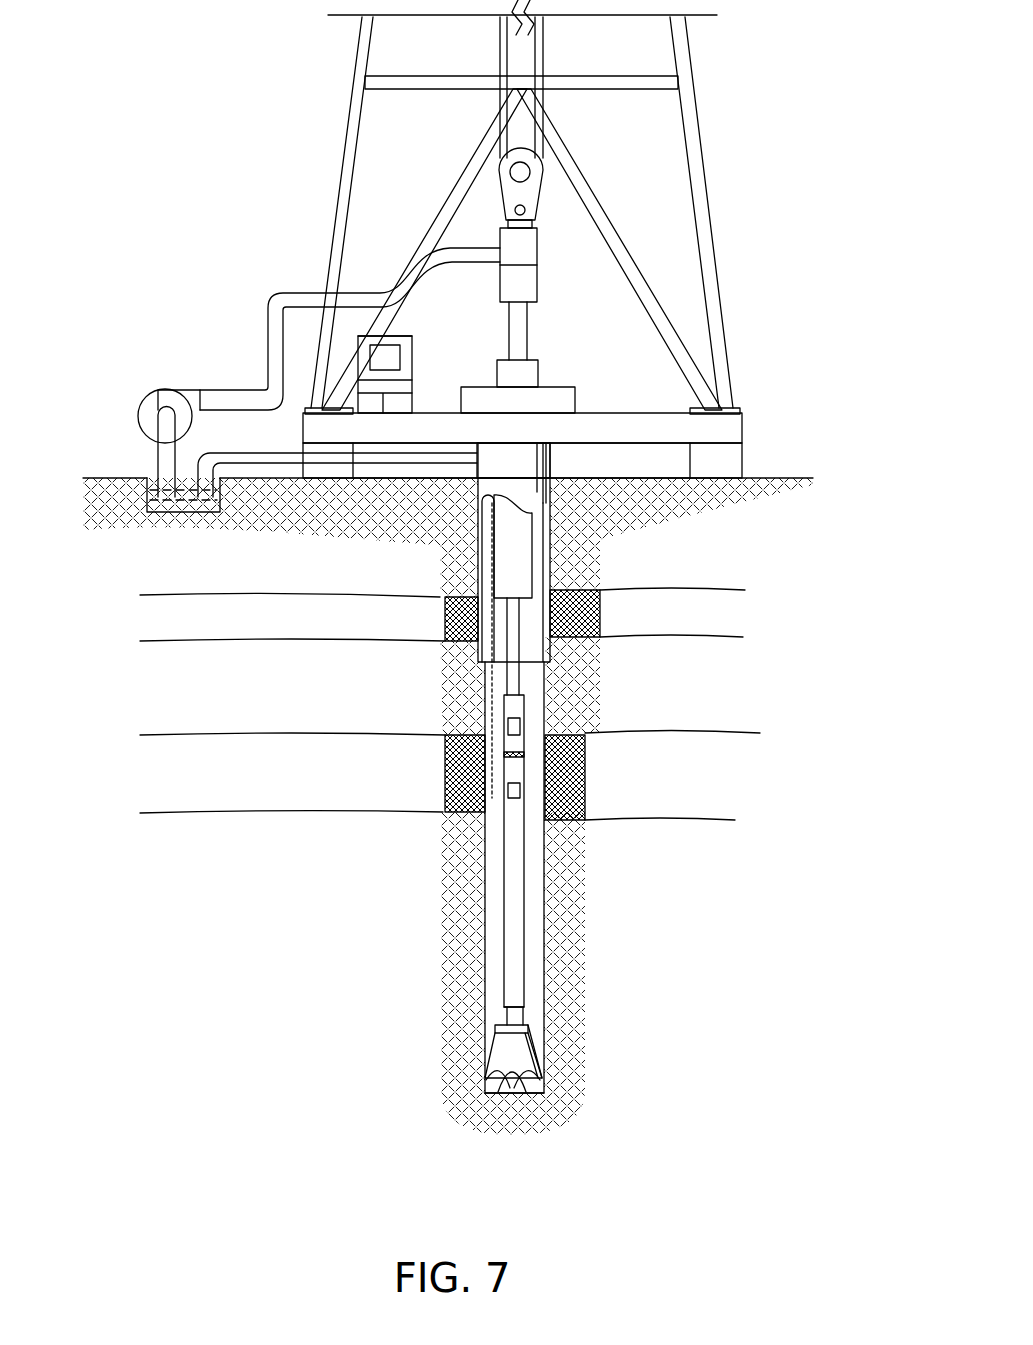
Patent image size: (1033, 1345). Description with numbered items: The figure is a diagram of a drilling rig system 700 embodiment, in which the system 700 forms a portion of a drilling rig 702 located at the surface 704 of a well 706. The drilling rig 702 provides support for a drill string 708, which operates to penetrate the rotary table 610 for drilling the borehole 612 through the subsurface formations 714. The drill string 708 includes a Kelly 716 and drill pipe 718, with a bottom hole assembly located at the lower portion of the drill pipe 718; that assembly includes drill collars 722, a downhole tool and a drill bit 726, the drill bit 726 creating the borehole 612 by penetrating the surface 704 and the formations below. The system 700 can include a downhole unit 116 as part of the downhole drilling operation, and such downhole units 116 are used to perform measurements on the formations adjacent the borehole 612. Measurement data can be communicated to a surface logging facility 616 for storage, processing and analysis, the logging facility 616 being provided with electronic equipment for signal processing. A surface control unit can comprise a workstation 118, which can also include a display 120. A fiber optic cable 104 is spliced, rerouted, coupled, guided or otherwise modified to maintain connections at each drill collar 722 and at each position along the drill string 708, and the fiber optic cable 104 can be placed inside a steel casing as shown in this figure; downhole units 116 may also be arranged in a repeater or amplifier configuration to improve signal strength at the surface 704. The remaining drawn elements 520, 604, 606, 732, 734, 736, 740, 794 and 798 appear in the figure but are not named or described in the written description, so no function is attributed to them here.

The fiber optic cable 104 is at (492, 712).
The downhole unit 116 is at (513, 988).
The workstation 118 is at (413, 347).
The display 120 is at (402, 358).
The wellbore section 520 is at (435, 657).
The drilling platform 604 is at (742, 427).
The derrick 606 is at (695, 107).
The rotary table 610 is at (478, 386).
The borehole 612 is at (545, 957).
The surface logging facility 616 is at (400, 331).
The drilling rig system 700 is at (215, 106).
The drilling rig 702 is at (713, 203).
The surface 704 is at (765, 478).
The well 706 is at (557, 473).
The drill string 708 is at (524, 834).
The subsurface formations 714 is at (120, 593).
The Kelly 716 is at (530, 320).
The drill pipe 718 is at (513, 632).
The drill collars 722 is at (533, 560).
The drill bit 726 is at (520, 1047).
The mud pump 732 is at (173, 390).
The mud pit 734 is at (168, 507).
The hose 736 is at (270, 340).
The casing 740 is at (540, 685).
The downhole tool 794 is at (527, 757).
The kelly bushing 798 is at (540, 376).